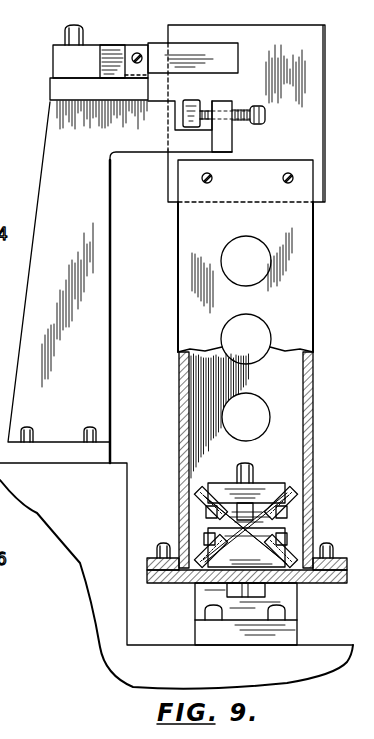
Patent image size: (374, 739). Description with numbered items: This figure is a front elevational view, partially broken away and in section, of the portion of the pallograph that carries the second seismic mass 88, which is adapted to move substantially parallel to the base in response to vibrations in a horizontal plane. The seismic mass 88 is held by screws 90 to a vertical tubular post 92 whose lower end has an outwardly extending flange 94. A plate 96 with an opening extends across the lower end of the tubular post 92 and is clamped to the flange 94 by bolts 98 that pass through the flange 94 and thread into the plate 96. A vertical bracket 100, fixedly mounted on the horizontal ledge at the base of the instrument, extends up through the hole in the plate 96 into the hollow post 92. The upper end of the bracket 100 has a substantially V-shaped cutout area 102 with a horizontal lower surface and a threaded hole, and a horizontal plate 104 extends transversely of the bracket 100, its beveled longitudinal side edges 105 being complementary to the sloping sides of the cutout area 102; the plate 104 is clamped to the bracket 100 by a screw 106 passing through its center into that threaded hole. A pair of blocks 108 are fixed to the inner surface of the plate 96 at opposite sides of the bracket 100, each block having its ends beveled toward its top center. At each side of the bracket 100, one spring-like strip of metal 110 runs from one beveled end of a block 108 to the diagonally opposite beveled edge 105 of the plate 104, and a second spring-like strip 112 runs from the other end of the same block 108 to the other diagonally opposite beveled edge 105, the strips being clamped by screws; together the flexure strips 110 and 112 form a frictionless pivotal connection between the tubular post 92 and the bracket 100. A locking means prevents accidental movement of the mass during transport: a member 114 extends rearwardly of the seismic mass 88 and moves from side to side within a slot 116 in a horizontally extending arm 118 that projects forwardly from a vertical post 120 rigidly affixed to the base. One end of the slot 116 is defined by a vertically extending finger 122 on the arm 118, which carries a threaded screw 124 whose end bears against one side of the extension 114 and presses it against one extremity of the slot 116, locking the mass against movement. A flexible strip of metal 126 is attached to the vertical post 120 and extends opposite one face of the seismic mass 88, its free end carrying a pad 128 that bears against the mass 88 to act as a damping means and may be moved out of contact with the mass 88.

The second seismic mass 88 is at (293, 35).
The screws 90 is at (285, 165).
The vertical tubular post 92 is at (297, 252).
The flange 94 is at (333, 565).
The plate 96 is at (313, 583).
The bolts 98 is at (160, 543).
The vertical bracket 100 is at (290, 600).
The V-shaped cutout area 102 is at (290, 483).
The horizontal plate 104 is at (262, 490).
The beveled longitudinal side edges 105 is at (214, 490).
The screw 106 is at (250, 470).
The blocks 108 is at (222, 562).
The spring-like strip of metal 110 is at (247, 532).
The second spring-like strip of metal 112 is at (237, 537).
The member 114 is at (188, 100).
The slot 116 is at (180, 100).
The horizontally extending arm 118 is at (144, 135).
The vertical post 120 is at (50, 183).
The vertically extending finger 122 is at (229, 101).
The screw 124 is at (263, 117).
The flexible strip of metal 126 is at (158, 55).
The pad 128 is at (225, 52).